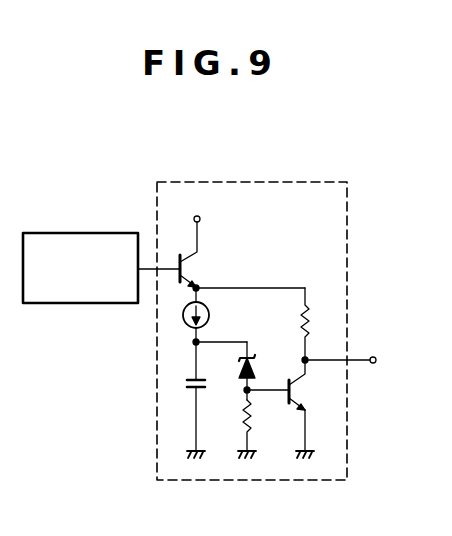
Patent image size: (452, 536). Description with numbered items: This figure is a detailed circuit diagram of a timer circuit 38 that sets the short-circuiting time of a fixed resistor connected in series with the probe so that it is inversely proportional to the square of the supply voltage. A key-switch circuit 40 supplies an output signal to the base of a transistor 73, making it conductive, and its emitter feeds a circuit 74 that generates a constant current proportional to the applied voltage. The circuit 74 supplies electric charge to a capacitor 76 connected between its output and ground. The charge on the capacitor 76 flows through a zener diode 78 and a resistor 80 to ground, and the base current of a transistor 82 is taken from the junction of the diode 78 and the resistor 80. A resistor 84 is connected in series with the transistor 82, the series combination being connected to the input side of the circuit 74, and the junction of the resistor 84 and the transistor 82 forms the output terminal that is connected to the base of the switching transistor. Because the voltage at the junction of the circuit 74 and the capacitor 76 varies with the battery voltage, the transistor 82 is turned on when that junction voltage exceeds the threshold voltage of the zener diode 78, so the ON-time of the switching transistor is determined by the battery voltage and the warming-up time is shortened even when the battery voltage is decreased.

The timer circuit 38 is at (245, 182).
The key-switch circuit 40 is at (80, 304).
The transistor 73 is at (191, 261).
The circuit for generating a constant current 74 is at (209, 315).
The capacitor 76 is at (186, 382).
The zener diode 78 is at (252, 360).
The resistor 80 is at (250, 414).
The transistor 82 is at (308, 400).
The resistor 84 is at (311, 312).